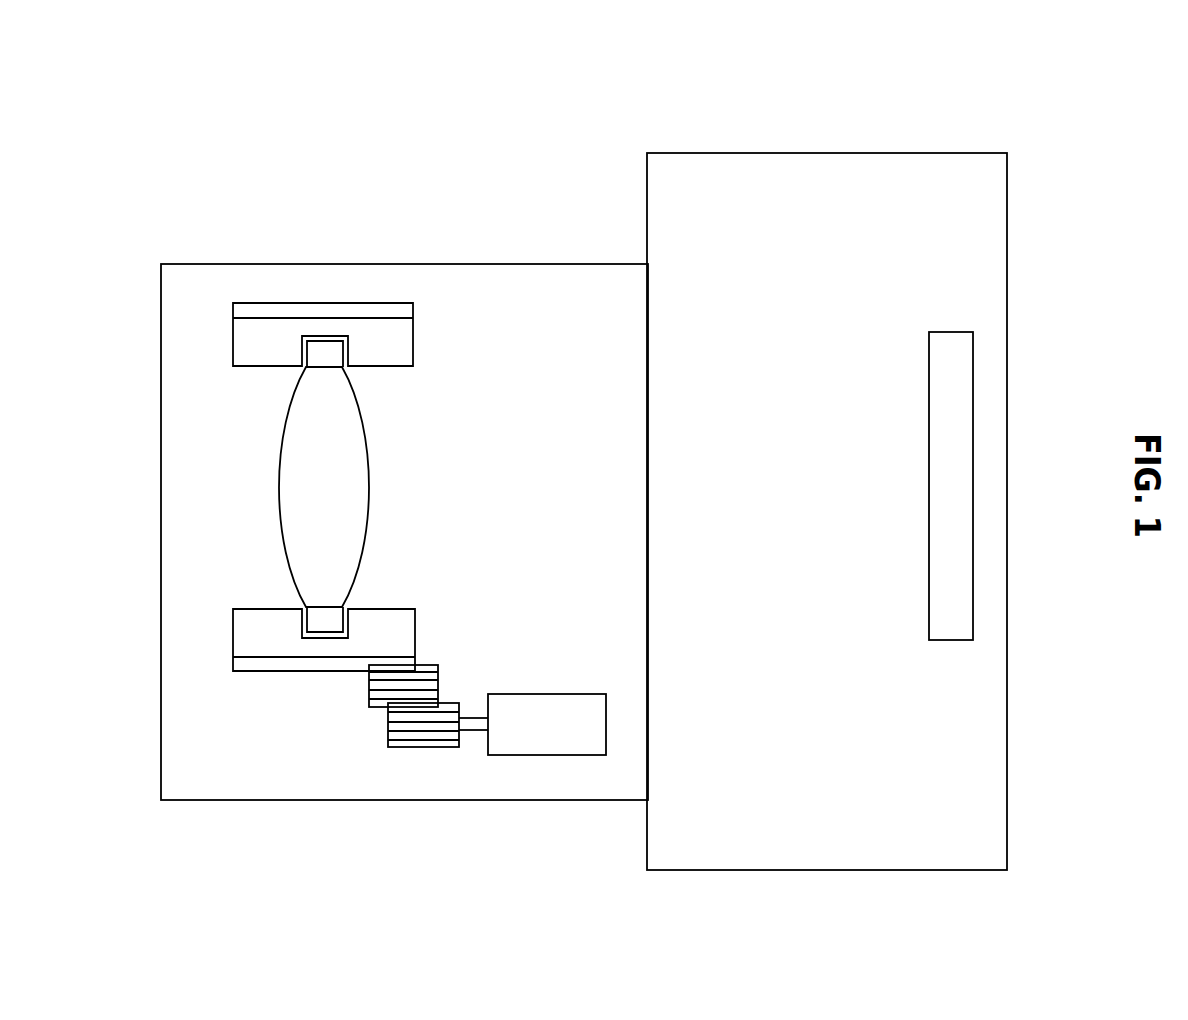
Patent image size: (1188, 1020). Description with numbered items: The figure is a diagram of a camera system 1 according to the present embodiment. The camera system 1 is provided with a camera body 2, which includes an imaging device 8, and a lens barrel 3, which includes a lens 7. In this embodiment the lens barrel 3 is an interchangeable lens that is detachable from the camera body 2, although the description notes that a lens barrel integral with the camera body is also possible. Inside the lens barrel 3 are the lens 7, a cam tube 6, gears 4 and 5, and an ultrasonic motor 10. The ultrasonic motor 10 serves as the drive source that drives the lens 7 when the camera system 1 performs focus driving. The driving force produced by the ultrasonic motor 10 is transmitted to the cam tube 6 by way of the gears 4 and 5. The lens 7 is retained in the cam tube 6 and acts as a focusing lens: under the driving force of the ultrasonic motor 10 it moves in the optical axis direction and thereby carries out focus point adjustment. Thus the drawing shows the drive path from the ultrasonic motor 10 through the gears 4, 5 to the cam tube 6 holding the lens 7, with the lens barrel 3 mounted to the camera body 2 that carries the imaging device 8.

The camera system 1 is at (1085, 100).
The camera body 2 is at (859, 859).
The lens barrel 3 is at (551, 280).
The gear 4 is at (427, 734).
The gear 5 is at (382, 697).
The cam tube 6 is at (271, 656).
The lens 7 is at (355, 490).
The imaging device 8 is at (945, 442).
The ultrasonic motor 10 is at (537, 710).